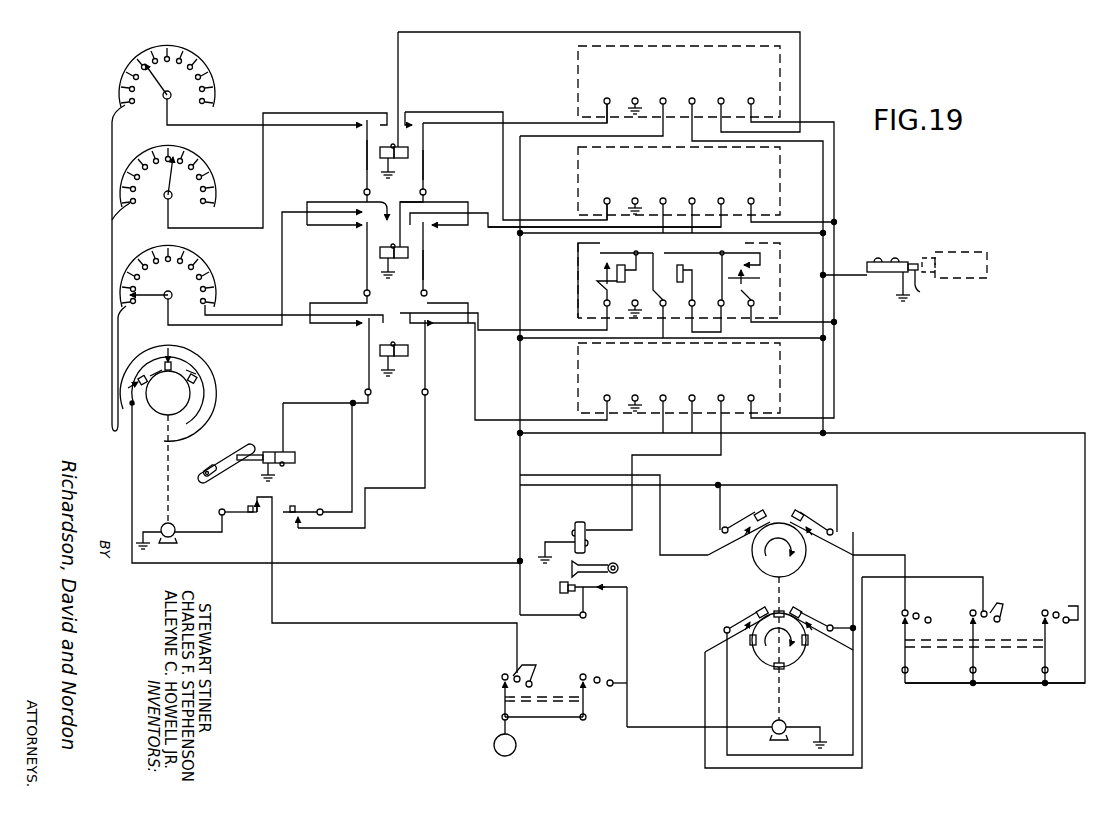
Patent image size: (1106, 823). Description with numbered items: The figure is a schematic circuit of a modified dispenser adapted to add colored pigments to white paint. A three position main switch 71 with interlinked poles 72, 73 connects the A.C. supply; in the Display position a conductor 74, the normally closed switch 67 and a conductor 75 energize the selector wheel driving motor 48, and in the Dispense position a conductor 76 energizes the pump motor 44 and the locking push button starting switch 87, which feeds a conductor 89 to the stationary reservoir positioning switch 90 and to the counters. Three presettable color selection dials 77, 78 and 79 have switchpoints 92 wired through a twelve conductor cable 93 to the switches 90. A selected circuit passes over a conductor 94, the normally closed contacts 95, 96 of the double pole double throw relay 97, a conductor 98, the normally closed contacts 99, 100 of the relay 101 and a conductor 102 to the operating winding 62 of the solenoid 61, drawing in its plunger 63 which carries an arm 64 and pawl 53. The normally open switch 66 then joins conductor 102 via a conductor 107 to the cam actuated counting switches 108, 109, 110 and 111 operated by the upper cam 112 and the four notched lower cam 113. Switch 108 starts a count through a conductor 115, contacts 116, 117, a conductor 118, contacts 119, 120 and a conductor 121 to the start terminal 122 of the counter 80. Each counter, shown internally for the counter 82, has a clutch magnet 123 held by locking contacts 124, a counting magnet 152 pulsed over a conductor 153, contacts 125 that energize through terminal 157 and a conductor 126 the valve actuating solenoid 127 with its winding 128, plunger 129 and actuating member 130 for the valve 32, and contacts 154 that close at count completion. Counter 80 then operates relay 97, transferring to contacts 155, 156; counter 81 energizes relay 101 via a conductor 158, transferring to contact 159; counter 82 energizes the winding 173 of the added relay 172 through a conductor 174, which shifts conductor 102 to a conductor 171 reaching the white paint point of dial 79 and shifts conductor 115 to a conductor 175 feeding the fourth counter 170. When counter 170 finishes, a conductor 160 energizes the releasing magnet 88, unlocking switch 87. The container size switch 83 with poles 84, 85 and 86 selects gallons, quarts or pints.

The presettable color selection dial 77 is at (210, 72).
The presettable color selection dial 78 is at (210, 170).
The presettable color selection dial 79 is at (212, 276).
The switchpoint 92 is at (190, 72).
The twelve conductor cable 93 is at (112, 248).
The conductor 94 is at (226, 122).
The conductor 171 is at (226, 315).
The stationary reservoir positioning switch 90 is at (216, 380).
The conductor 89 is at (132, 445).
The solenoid 61 is at (253, 447).
The operating winding 62 is at (274, 444).
The plunger 63 is at (297, 456).
The arm 64 is at (250, 464).
The pawl 53 is at (212, 466).
The selector wheel driving motor 48 is at (174, 538).
The conductor 75 is at (223, 532).
The normally closed switch 67 is at (240, 508).
The normally open switch 66 is at (294, 506).
The conductor 74 is at (274, 546).
The normally open contact 155 is at (384, 114).
The normally open contact 156 is at (405, 114).
The normally closed contact 95 is at (364, 133).
The normally closed contact 96 is at (364, 165).
The double pole double throw relay 97 is at (404, 161).
The conductor 98 is at (364, 192).
The normally closed contact 120 is at (426, 130).
The normally closed contact 119 is at (426, 160).
The conductor 118 is at (434, 200).
The conductor 121 is at (550, 122).
The normally open contact 159 is at (354, 204).
The normally closed contact 99 is at (364, 228).
The normally closed contact 100 is at (364, 278).
The double pole double throw relay 101 is at (404, 262).
The normally closed contact 117 is at (427, 226).
The normally closed contact 116 is at (426, 275).
The conductor 175 is at (416, 322).
The relay 172 is at (410, 362).
The operating winding 173 is at (402, 360).
The conductor 174 is at (477, 330).
The conductor 115 is at (427, 404).
The conductor 102 is at (368, 402).
The presettable counter 80 is at (781, 71).
The presettable counter 81 is at (578, 165).
The counter 170 is at (781, 380).
The start terminal 122 is at (618, 96).
The terminal 157 is at (757, 97).
The conductor 158 is at (542, 226).
The counter 82 is at (578, 247).
The locking contacts 124 is at (605, 266).
The clutch magnet 123 is at (597, 285).
The counting magnet 152 is at (684, 270).
The contacts 125 is at (748, 260).
The contacts 154 is at (756, 280).
The conductor 126 is at (825, 346).
The plunger 129 is at (868, 266).
The valve actuating solenoid 127 is at (902, 265).
The operating winding 128 is at (887, 276).
The actuating member 130 is at (930, 283).
The valve solenoid 32 is at (952, 254).
The conductor 160 is at (730, 450).
The conductor 107 is at (788, 484).
The cam actuated counting switch 108 is at (755, 512).
The cam actuated counting switch 109 is at (822, 515).
The upper cam 112 is at (806, 555).
The cam actuated counting switch 110 is at (745, 618).
The cam actuated counting switch 111 is at (812, 616).
The lower cam 113 is at (802, 660).
The pump motor 44 is at (784, 722).
The releasing magnet 88 is at (592, 511).
The starting switch 87 is at (625, 580).
The conductor 76 is at (632, 601).
The pole 73 is at (586, 688).
The pole 72 is at (504, 706).
The main switch 71 is at (570, 718).
The conductor 153 is at (936, 434).
The container capacity switch 83 is at (906, 686).
The pole 84 is at (900, 662).
The pole 85 is at (966, 662).
The pole 86 is at (1040, 662).